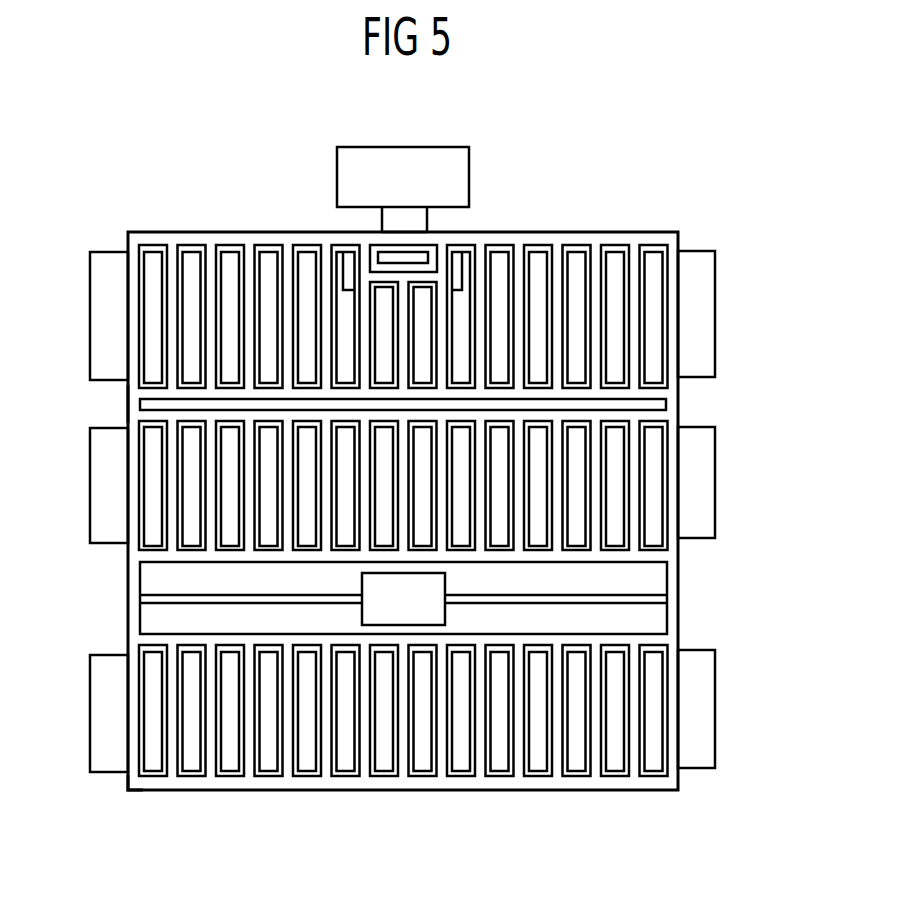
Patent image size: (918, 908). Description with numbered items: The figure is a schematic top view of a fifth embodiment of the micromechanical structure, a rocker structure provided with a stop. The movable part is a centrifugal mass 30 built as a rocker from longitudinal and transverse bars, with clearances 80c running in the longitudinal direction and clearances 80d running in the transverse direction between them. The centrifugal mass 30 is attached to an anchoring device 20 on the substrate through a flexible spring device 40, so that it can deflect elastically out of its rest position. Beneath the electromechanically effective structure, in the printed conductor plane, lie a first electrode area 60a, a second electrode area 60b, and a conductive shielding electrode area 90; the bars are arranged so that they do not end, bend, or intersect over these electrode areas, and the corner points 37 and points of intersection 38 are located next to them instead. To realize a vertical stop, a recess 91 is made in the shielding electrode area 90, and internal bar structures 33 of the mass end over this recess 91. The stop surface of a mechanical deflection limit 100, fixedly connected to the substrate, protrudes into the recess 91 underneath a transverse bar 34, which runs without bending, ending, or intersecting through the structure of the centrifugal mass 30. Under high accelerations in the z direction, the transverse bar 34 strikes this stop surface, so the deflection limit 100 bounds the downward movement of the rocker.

The anchoring device 20 is at (387, 614).
The centrifugal mass 30 is at (173, 243).
The internal bar structures 33 is at (402, 277).
The transverse bar 34 is at (402, 240).
The corner points 37 is at (133, 784).
The points of intersection 38 is at (133, 415).
The flexible spring device 40 is at (150, 601).
The first electrode area 60a is at (710, 705).
The second electrode area 60b is at (710, 468).
The clearances running in the longitudinal direction 80c is at (650, 297).
The clearances running in the transverse direction 80d is at (660, 401).
The conductive shielding electrode area 90 is at (698, 253).
The recess 91 is at (455, 275).
The mechanical deflection limit 100 is at (412, 217).